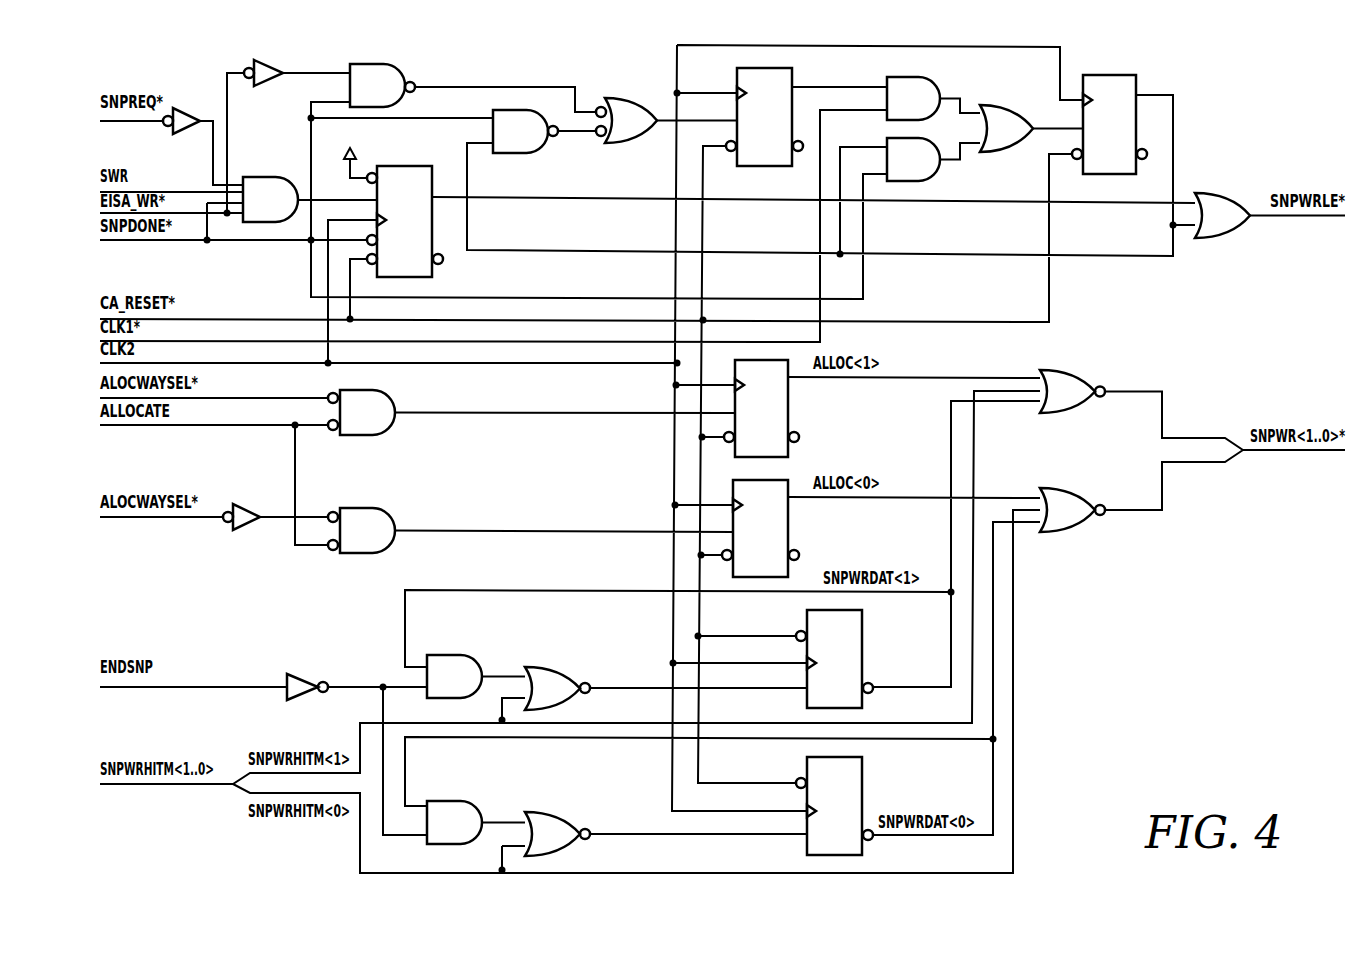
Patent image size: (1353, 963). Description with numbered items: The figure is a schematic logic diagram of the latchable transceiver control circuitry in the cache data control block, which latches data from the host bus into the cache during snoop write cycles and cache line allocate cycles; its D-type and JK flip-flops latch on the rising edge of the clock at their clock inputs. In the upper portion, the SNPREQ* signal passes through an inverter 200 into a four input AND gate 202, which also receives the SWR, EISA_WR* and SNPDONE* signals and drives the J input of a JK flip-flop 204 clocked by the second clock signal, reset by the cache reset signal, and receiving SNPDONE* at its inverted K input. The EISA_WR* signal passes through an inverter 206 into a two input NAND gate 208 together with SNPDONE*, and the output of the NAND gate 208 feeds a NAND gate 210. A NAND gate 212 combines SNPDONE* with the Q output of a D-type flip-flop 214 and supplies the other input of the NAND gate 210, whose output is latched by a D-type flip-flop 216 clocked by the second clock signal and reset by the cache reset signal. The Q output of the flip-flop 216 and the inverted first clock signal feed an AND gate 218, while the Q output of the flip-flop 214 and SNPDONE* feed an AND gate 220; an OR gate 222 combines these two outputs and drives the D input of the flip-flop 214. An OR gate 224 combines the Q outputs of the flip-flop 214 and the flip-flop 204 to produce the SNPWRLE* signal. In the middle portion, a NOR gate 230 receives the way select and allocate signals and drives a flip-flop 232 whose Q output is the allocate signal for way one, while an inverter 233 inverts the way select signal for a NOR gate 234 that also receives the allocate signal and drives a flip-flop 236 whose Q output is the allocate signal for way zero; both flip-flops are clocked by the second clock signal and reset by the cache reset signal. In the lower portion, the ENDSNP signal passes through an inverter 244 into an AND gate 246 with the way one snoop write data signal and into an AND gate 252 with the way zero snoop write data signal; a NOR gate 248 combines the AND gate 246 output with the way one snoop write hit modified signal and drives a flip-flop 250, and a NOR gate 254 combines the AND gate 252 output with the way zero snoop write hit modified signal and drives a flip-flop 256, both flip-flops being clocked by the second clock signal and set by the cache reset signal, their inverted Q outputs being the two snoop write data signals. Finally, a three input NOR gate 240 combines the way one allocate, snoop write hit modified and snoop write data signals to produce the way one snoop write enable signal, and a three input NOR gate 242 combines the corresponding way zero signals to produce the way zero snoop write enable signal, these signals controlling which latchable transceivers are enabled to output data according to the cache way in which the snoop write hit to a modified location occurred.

The inverter 200 is at (188, 135).
The four input AND gate 202 is at (268, 177).
The JK flip-flop 204 is at (406, 166).
The inverter 206 is at (270, 60).
The two input NAND gate 208 is at (409, 67).
The two input NAND gate 210 is at (625, 98).
The two input NAND gate 212 is at (523, 153).
The D-type flip-flop 214 is at (1132, 75).
The D-type flip-flop 216 is at (795, 69).
The two input AND gate 218 is at (937, 78).
The two input AND gate 220 is at (935, 180).
The two input OR gate 222 is at (1019, 105).
The two input OR gate 224 is at (1218, 193).
The two input NOR gate 230 is at (392, 390).
The D-type flip-flop 232 is at (790, 407).
The inverter 233 is at (247, 532).
The two input NOR gate 234 is at (392, 508).
The D-type flip-flop 236 is at (790, 527).
The three input NOR gate 240 is at (1076, 370).
The three input NOR gate 242 is at (1076, 488).
The inverter 244 is at (306, 702).
The two input AND gate 246 is at (470, 655).
The two input NOR gate 248 is at (567, 667).
The D-type flip-flop 250 is at (866, 658).
The two input AND gate 252 is at (470, 801).
The two input NOR gate 254 is at (567, 812).
The D-type flip-flop 256 is at (866, 792).